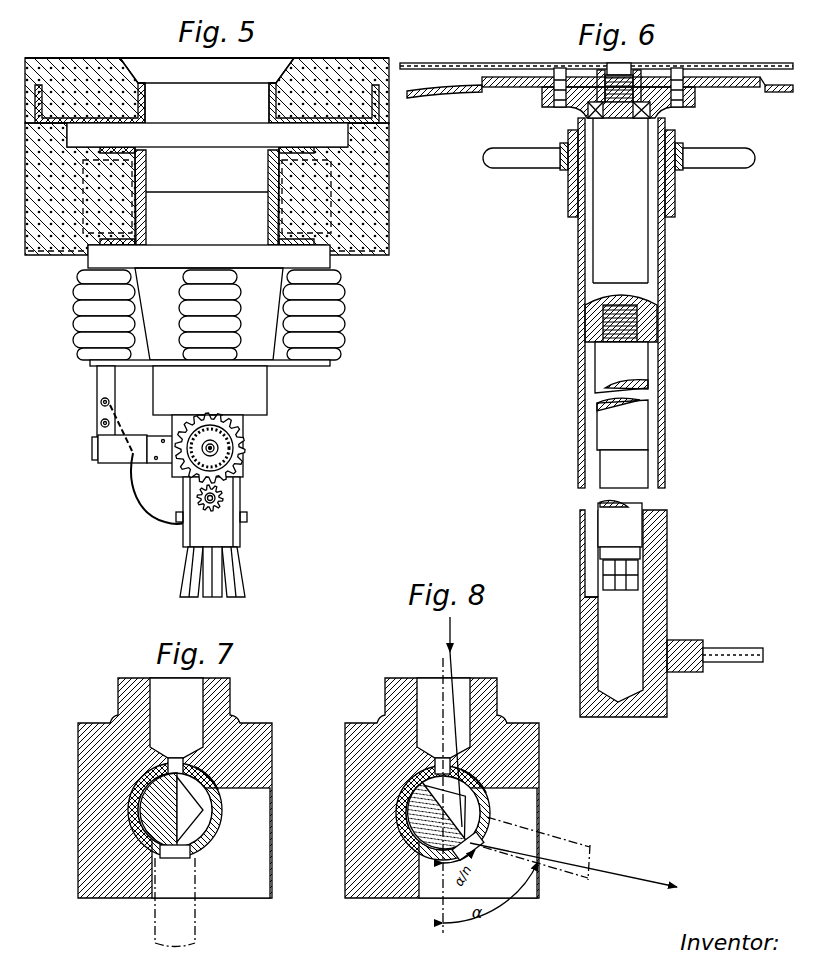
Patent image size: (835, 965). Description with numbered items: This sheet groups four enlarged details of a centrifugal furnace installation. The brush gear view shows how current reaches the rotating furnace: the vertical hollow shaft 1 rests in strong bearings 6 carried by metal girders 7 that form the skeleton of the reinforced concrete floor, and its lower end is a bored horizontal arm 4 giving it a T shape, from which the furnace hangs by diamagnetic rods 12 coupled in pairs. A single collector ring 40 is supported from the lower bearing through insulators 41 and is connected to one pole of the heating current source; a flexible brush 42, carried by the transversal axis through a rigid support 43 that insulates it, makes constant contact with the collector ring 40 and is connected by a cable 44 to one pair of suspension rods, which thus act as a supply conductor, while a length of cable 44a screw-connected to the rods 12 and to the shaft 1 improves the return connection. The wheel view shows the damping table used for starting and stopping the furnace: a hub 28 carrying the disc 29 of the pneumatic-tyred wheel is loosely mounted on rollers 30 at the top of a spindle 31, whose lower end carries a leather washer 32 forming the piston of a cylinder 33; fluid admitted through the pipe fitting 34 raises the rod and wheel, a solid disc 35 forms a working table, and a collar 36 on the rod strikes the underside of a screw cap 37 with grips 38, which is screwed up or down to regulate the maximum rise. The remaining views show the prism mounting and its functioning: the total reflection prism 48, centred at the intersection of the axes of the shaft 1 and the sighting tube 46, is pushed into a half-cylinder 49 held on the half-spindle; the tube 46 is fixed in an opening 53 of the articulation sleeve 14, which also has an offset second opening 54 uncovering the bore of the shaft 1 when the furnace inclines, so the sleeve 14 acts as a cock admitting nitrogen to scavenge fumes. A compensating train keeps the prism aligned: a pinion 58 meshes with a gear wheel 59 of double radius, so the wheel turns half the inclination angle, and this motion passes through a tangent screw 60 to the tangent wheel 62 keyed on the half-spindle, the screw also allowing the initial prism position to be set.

In FIG. 7, the vertical hollow shaft 1 is at (230, 692).
In FIG. 8, the vertical hollow shaft 1 is at (495, 686).
In FIG. 5, the bored horizontal arm 4 is at (247, 472).
In FIG. 7, the bored horizontal arm 4 is at (90, 870).
In FIG. 8, the bored horizontal arm 4 is at (367, 890).
In FIG. 5, the bearings 6 is at (257, 177).
In FIG. 5, the metal girders 7 is at (70, 122).
In FIG. 5, the suspension rods 12 is at (183, 579).
In FIG. 7, the articulation sleeve 14 is at (160, 777).
In FIG. 8, the articulation sleeve 14 is at (490, 803).
In FIG. 6, the hub 28 is at (578, 105).
In FIG. 6, the disc 29 is at (459, 96).
In FIG. 6, the rollers 30 is at (663, 118).
In FIG. 6, the spindle 31 is at (633, 222).
In FIG. 6, the washer 32 is at (640, 553).
In FIG. 6, the cylinder 33 is at (658, 619).
In FIG. 6, the pipe fitting 34 is at (672, 668).
In FIG. 6, the solid disc 35 is at (724, 63).
In FIG. 6, the collar 36 is at (647, 292).
In FIG. 6, the screw cap 37 is at (683, 148).
In FIG. 6, the grips 38 is at (500, 162).
In FIG. 5, the collector ring 40 is at (287, 366).
In FIG. 5, the insulators 41 is at (82, 313).
In FIG. 5, the flexible brush 42 is at (97, 385).
In FIG. 5, the rigid support 43 is at (123, 462).
In FIG. 5, the cable 44 is at (142, 492).
In FIG. 5, the length of cable 44a is at (163, 528).
In FIG. 7, the tube 46 is at (193, 927).
In FIG. 8, the tube 46 is at (588, 847).
In FIG. 7, the total reflection prism 48 is at (203, 810).
In FIG. 8, the total reflection prism 48 is at (463, 790).
In FIG. 7, the half-cylinder 49 is at (148, 812).
In FIG. 8, the half-cylinder 49 is at (420, 818).
In FIG. 7, the opening 53 is at (183, 857).
In FIG. 8, the opening 53 is at (483, 822).
In FIG. 7, the second opening 54 is at (212, 787).
In FIG. 8, the second opening 54 is at (483, 755).
In FIG. 5, the pinion 58 is at (220, 498).
In FIG. 5, the gear wheel 59 is at (250, 454).
In FIG. 5, the tangent screw 60 is at (217, 417).
In FIG. 5, the tangent wheel 62 is at (223, 442).